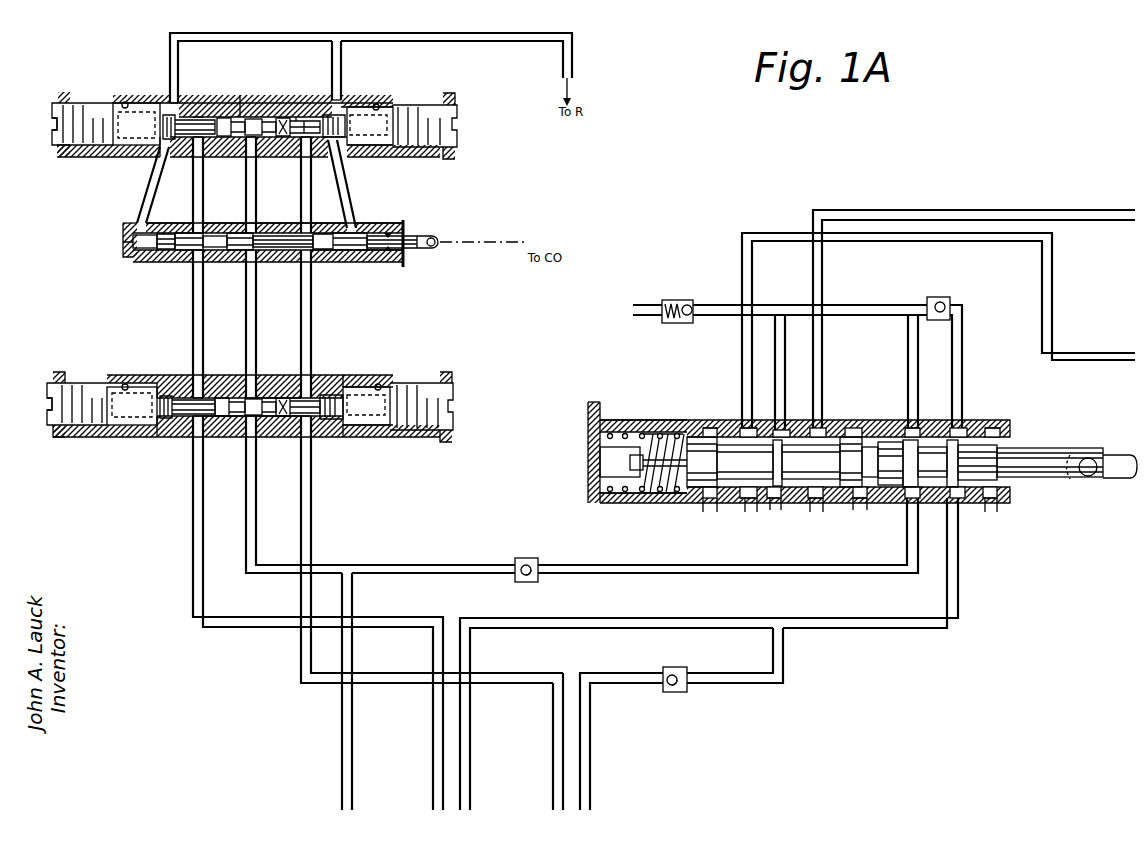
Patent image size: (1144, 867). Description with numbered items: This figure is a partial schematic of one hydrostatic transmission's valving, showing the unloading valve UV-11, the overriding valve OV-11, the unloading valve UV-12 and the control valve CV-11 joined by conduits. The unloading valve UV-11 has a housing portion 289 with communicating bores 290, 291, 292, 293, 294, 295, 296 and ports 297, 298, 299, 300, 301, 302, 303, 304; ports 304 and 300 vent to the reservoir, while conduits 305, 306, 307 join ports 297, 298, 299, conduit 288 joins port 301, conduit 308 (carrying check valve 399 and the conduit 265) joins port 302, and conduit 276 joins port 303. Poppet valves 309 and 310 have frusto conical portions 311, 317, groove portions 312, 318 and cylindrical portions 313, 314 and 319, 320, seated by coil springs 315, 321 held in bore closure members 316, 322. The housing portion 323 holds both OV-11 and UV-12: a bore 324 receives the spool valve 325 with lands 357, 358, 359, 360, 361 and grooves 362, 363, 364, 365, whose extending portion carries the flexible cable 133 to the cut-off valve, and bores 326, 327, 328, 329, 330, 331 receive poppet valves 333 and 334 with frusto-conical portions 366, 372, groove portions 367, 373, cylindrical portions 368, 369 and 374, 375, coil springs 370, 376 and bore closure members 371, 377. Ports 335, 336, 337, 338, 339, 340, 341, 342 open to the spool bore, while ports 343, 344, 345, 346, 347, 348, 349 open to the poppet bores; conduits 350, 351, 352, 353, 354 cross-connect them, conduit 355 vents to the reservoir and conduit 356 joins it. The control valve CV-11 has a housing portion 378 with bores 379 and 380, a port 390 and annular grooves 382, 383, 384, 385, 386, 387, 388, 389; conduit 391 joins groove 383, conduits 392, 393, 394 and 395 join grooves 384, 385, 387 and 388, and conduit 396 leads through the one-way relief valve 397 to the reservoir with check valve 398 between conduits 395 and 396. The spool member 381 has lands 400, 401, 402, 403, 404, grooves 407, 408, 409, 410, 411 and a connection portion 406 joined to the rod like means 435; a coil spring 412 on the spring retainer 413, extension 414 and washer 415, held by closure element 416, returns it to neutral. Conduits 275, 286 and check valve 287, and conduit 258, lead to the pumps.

The flexible cable 133 is at (474, 247).
The conduit 258 is at (553, 758).
The conduit 265 is at (342, 793).
The conduit 275 is at (470, 798).
The conduit 276 is at (193, 512).
The conduit 286 is at (590, 791).
The check valve 287 is at (678, 693).
The conduit 288 is at (311, 523).
The housing portion 289 is at (65, 380).
The bore 290 is at (88, 383).
The bore 291 is at (124, 385).
The bore 292 is at (175, 385).
The bore 293 is at (258, 392).
The bore 294 is at (322, 385).
The bore 295 is at (380, 385).
The bore 296 is at (418, 385).
The port 297 is at (204, 385).
The port 298 is at (245, 396).
The port 299 is at (270, 396).
The port 300 is at (345, 432).
The port 301 is at (311, 460).
The port 302 is at (256, 467).
The port 303 is at (203, 470).
The port 304 is at (160, 432).
The conduit 305 is at (193, 302).
The conduit 306 is at (246, 311).
The conduit 307 is at (311, 314).
The conduit 308 is at (246, 538).
The poppet valve 309 is at (183, 428).
The poppet valve 310 is at (322, 432).
The frusto conical portion 311 is at (165, 393).
The groove portion 312 is at (208, 420).
The cylindrical portion 313 is at (218, 418).
The cylindrical portion 314 is at (240, 396).
The coil spring 315 is at (132, 406).
The bore closure member 316 is at (47, 387).
The frusto conical portion 317 is at (340, 390).
The groove portion 318 is at (268, 420).
The cylindrical portion 319 is at (262, 418).
The cylindrical portion 320 is at (288, 397).
The coil spring 321 is at (352, 407).
The bore closure member 322 is at (446, 103).
The housing portion 323 is at (68, 150).
The bore 324 is at (388, 256).
The spool valve 325 is at (418, 233).
The bore 326 is at (82, 103).
The bore 327 is at (124, 103).
The bore 328 is at (196, 100).
The bore 329 is at (262, 112).
The bore 330 is at (299, 115).
The bore 331 is at (380, 105).
The poppet valve 333 is at (185, 98).
The poppet valve 334 is at (292, 98).
The port 335 is at (137, 226).
The port 336 is at (190, 230).
The port 337 is at (247, 225).
The port 338 is at (302, 226).
The port 339 is at (357, 229).
The port 340 is at (312, 256).
The port 341 is at (258, 255).
The port 342 is at (205, 257).
The port 343 is at (172, 100).
The port 344 is at (160, 148).
The port 345 is at (196, 170).
The port 346 is at (248, 150).
The port 347 is at (300, 152).
The port 348 is at (343, 98).
The port 349 is at (338, 152).
The conduit 350 is at (147, 183).
The conduit 351 is at (193, 201).
The conduit 352 is at (250, 183).
The conduit 353 is at (303, 184).
The conduit 354 is at (346, 184).
The conduit 355 is at (170, 38).
The conduit 356 is at (343, 55).
The land 357 is at (160, 253).
The land 358 is at (215, 252).
The land 359 is at (283, 252).
The land 360 is at (335, 255).
The land 361 is at (426, 246).
The groove 362 is at (185, 252).
The groove 363 is at (236, 230).
The groove 364 is at (300, 230).
The groove 365 is at (331, 229).
The frusto-conical portion 366 is at (182, 148).
The groove portion 367 is at (214, 137).
The cylindrical portion 368 is at (225, 116).
The cylindrical portion 369 is at (240, 95).
The coil spring 370 is at (136, 124).
The bore closure member 371 is at (52, 138).
The frusto-conical portion 372 is at (342, 105).
The groove portion 373 is at (308, 118).
The cylindrical portion 374 is at (280, 116).
The cylindrical portion 375 is at (270, 137).
The coil spring 376 is at (352, 126).
The bore closure member 377 is at (458, 113).
The housing portion 378 is at (590, 427).
The bore 379 is at (650, 432).
The bore 380 is at (872, 437).
The spool member 381 is at (1062, 437).
The annular groove 382 is at (746, 426).
The annular groove 383 is at (745, 498).
The annular groove 384 is at (778, 490).
The annular groove 385 is at (815, 498).
The annular groove 386 is at (855, 428).
The annular groove 387 is at (896, 498).
The annular groove 388 is at (960, 430).
The annular groove 389 is at (992, 430).
The port 390 is at (618, 500).
The conduit 391 is at (742, 338).
The conduit 392 is at (775, 355).
The conduit 393 is at (1115, 210).
The conduit 394 is at (908, 353).
The conduit 395 is at (962, 327).
The conduit 396 is at (875, 305).
The one-way relief valve 397 is at (680, 298).
The check valve 398 is at (943, 297).
The check valve 399 is at (525, 556).
The land 400 is at (690, 459).
The land 401 is at (772, 490).
The land 402 is at (852, 464).
The land 403 is at (922, 433).
The land 404 is at (965, 498).
The connection portion 406 is at (1078, 476).
The groove 407 is at (733, 469).
The groove 408 is at (799, 469).
The groove 409 is at (880, 498).
The groove 410 is at (932, 489).
The groove 411 is at (985, 466).
The coil spring 412 is at (646, 498).
The spring retainer 413 is at (590, 487).
The extension 414 is at (668, 498).
The washer 415 is at (708, 428).
The closure element 416 is at (588, 406).
The rod like means 435 is at (1120, 458).
The unloading valve UV-12 is at (470, 138).
The overriding valve OV-11 is at (475, 226).
The unloading valve UV-11 is at (468, 378).
The control valve CV-11 is at (582, 456).